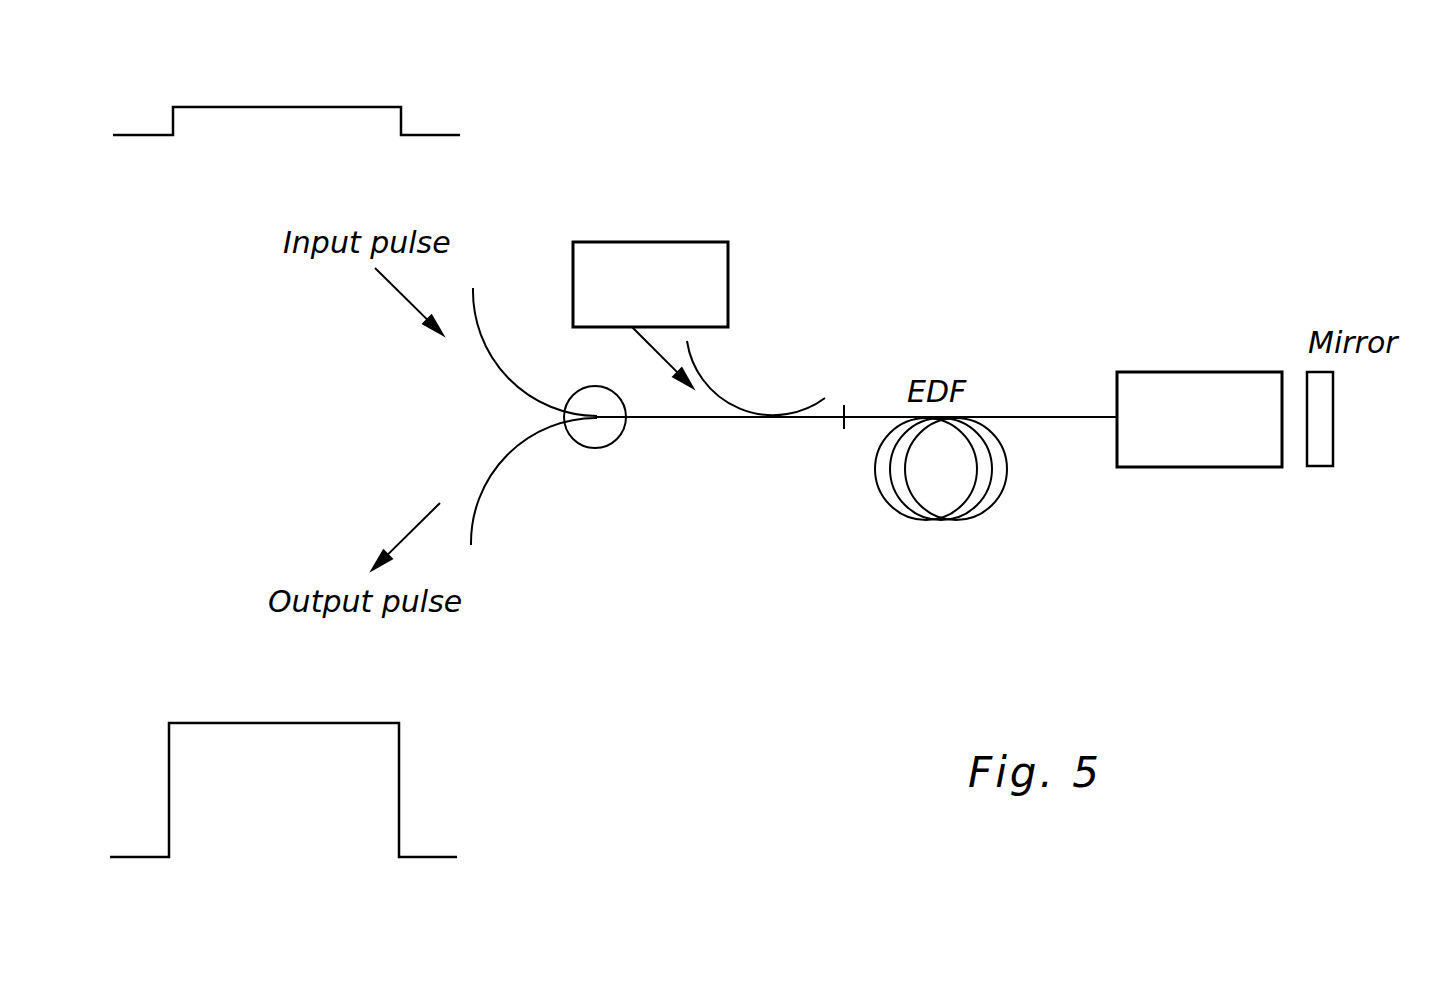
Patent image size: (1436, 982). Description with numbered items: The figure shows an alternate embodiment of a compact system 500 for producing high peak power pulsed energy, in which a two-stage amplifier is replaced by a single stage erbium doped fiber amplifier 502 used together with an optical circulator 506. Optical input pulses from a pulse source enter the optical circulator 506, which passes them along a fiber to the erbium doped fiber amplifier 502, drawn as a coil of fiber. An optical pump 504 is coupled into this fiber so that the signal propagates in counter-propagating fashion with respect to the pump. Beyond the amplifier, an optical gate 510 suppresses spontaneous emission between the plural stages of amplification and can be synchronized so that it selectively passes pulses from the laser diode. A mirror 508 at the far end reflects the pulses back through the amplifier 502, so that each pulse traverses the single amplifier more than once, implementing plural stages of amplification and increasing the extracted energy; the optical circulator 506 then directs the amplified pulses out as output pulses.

The pulse amplifying apparatus 500 is at (906, 243).
The single stage erbium doped fiber amplifier 502 is at (942, 521).
The optical pump 504 is at (651, 242).
The optical circulator 506 is at (603, 447).
The mirror 508 is at (1321, 466).
The optical gate 510 is at (1204, 467).